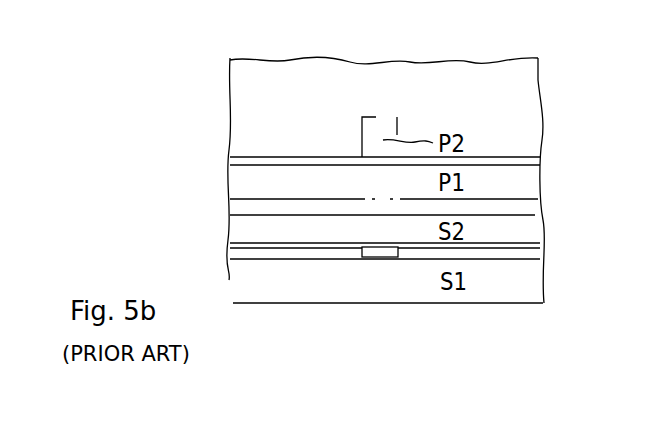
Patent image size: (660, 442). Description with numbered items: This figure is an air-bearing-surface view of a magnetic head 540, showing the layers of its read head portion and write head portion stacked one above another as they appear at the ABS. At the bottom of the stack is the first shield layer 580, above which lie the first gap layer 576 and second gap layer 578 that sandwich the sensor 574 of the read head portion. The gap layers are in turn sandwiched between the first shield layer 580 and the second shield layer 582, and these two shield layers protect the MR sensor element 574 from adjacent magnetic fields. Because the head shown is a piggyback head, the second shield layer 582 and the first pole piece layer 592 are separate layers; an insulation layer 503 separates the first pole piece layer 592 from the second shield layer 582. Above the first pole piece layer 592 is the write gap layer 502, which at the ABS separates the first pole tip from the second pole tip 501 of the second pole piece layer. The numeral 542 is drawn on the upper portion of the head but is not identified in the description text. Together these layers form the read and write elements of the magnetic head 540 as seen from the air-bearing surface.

The second pole tip 501 is at (380, 123).
The write gap layer 502 is at (300, 158).
The insulation layer 503 is at (533, 208).
The magnetic head 540 is at (558, 73).
The upper pole piece 542 is at (237, 89).
The sensor 574 is at (381, 258).
The first gap layer 576 is at (293, 262).
The second gap layer 578 is at (502, 247).
The first shield layer 580 is at (530, 283).
The second shield layer 582 is at (228, 237).
The first pole piece layer 592 is at (240, 181).